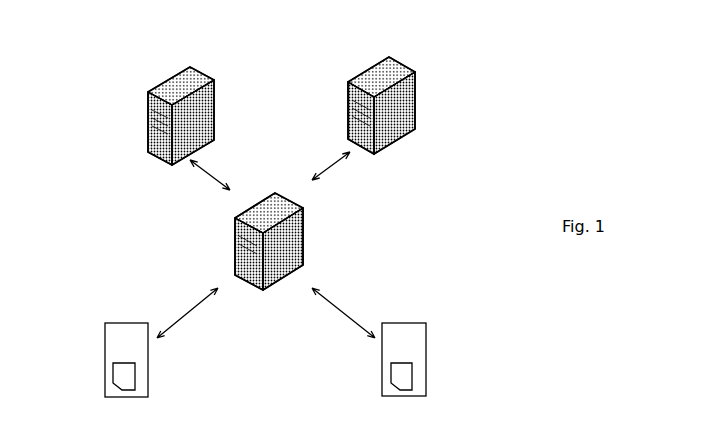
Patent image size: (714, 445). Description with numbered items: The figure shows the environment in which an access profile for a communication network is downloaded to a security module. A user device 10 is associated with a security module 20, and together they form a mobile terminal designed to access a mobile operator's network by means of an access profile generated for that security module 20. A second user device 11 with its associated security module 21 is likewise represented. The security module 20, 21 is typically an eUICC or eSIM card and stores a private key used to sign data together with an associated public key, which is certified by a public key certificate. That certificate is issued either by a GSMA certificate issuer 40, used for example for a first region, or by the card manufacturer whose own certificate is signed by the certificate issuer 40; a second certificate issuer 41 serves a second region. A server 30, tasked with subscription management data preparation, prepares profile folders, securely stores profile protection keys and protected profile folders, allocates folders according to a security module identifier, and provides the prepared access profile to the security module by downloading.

The user device 10 is at (149, 384).
The second user device 11 is at (427, 383).
The security module 20 is at (113, 374).
The security module 21 is at (390, 375).
The server 30 is at (305, 226).
The certificate issuer 40 is at (216, 100).
The second certificate issuer 41 is at (417, 92).